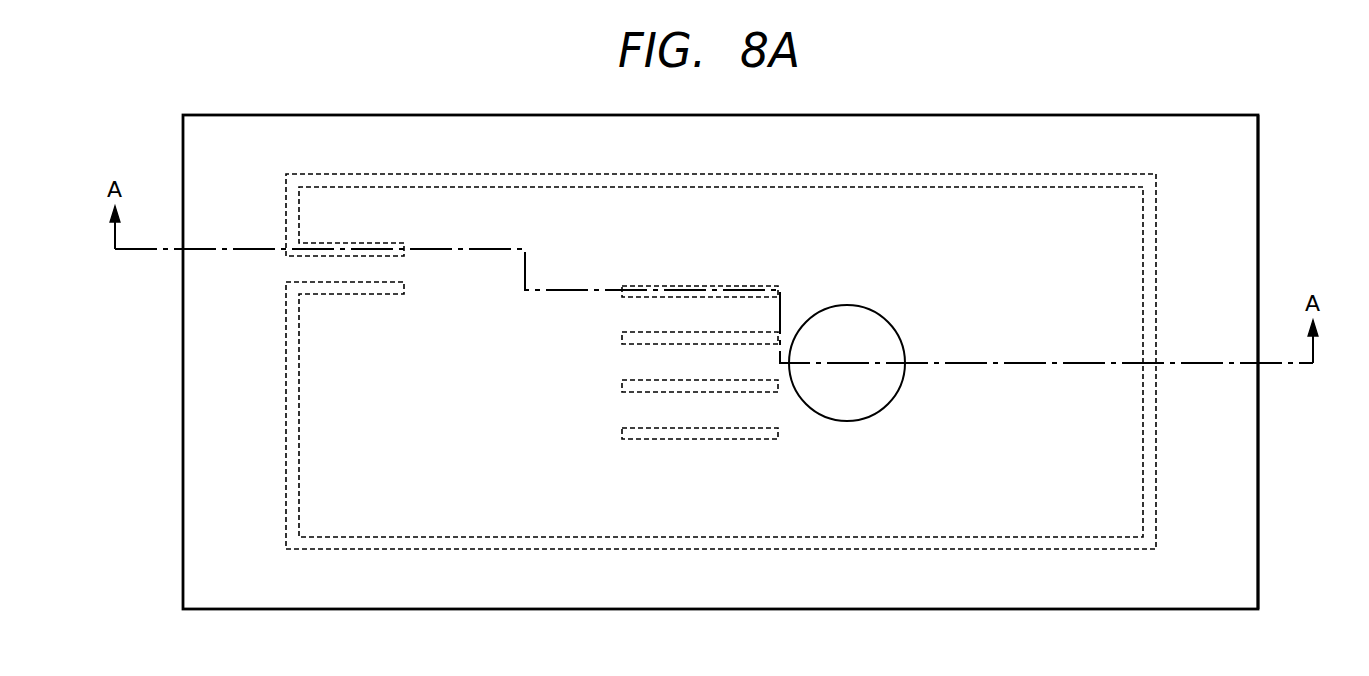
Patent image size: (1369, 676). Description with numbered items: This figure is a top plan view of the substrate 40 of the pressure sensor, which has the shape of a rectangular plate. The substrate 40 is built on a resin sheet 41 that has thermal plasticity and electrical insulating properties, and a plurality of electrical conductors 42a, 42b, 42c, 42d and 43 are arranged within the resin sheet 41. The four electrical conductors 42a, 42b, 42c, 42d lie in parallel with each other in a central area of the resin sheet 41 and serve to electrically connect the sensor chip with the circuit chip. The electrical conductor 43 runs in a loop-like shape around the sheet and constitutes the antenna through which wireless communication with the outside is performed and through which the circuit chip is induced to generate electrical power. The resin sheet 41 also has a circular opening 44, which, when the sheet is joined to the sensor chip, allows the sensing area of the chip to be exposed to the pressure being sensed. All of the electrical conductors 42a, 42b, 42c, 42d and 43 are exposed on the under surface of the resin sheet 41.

The substrate 40 is at (1258, 552).
The resin sheet 41 is at (1247, 444).
The electrical conductor 42a is at (716, 285).
The electrical conductor 42b is at (697, 332).
The electrical conductor 42c is at (697, 380).
The electrical conductor 42d is at (697, 428).
The electrical conductor 43 is at (1036, 173).
The circular opening 44 is at (902, 380).